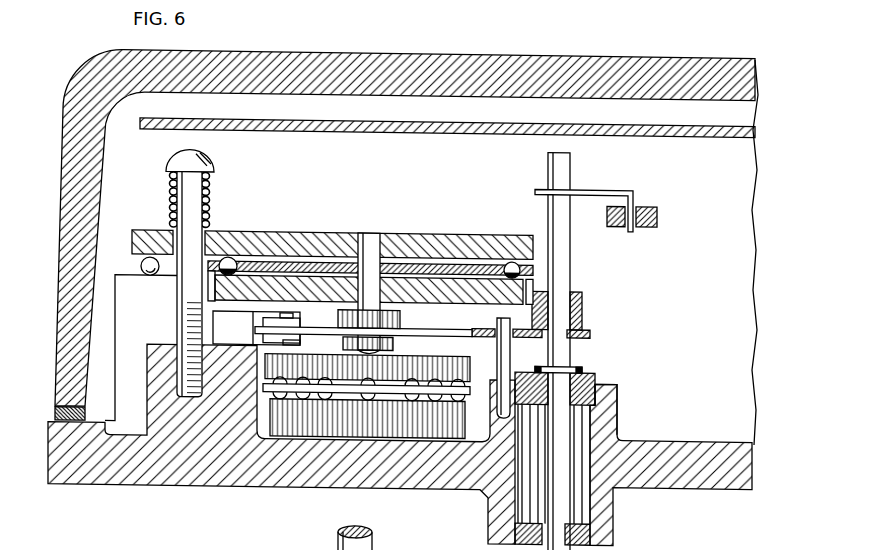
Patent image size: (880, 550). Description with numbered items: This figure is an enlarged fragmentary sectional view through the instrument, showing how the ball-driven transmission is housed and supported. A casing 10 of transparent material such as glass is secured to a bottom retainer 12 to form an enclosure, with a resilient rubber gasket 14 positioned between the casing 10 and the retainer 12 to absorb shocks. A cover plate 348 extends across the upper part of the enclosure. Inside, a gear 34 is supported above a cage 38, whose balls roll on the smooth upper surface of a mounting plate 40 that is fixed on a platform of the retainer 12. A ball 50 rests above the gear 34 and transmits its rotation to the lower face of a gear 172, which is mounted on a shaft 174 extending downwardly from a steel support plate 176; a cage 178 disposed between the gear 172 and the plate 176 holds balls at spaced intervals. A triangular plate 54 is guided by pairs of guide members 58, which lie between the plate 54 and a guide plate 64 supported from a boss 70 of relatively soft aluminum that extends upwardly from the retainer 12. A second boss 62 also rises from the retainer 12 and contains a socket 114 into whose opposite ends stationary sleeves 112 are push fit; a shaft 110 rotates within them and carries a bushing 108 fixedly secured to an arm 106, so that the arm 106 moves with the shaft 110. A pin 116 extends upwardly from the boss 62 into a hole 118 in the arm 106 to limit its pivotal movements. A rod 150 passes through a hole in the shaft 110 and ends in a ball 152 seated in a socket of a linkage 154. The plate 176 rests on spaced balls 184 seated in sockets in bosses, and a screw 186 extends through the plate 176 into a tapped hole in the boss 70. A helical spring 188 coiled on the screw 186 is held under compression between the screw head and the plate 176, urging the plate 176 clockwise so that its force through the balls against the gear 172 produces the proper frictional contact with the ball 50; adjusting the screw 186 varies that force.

The casing 10 is at (62, 207).
The bottom retainer 12 is at (688, 446).
The gasket 14 is at (55, 412).
The gear 34 is at (396, 361).
The cage 38 is at (341, 395).
The mounting plate 40 is at (369, 424).
The ball 50 is at (383, 311).
The plate 54 is at (430, 334).
The guide members 58 is at (305, 328).
The boss 62 is at (609, 432).
The guide plate 64 is at (213, 340).
The boss 70 is at (118, 350).
The arm 106 is at (589, 335).
The bushing 108 is at (582, 318).
The shaft 110 is at (571, 248).
The sleeves 112 is at (595, 376).
The socket 114 is at (602, 412).
The pin 116 is at (510, 356).
The hole 118 is at (492, 334).
The rod 150 is at (588, 192).
The ball 152 is at (638, 207).
The linkage 154 is at (660, 213).
The gear 172 is at (463, 283).
The shaft 174 is at (375, 234).
The support plate 176 is at (430, 234).
The cage 178 is at (272, 258).
The balls 184 is at (142, 262).
The screw 186 is at (213, 165).
The helical spring 188 is at (212, 190).
The cover plate 348 is at (426, 132).